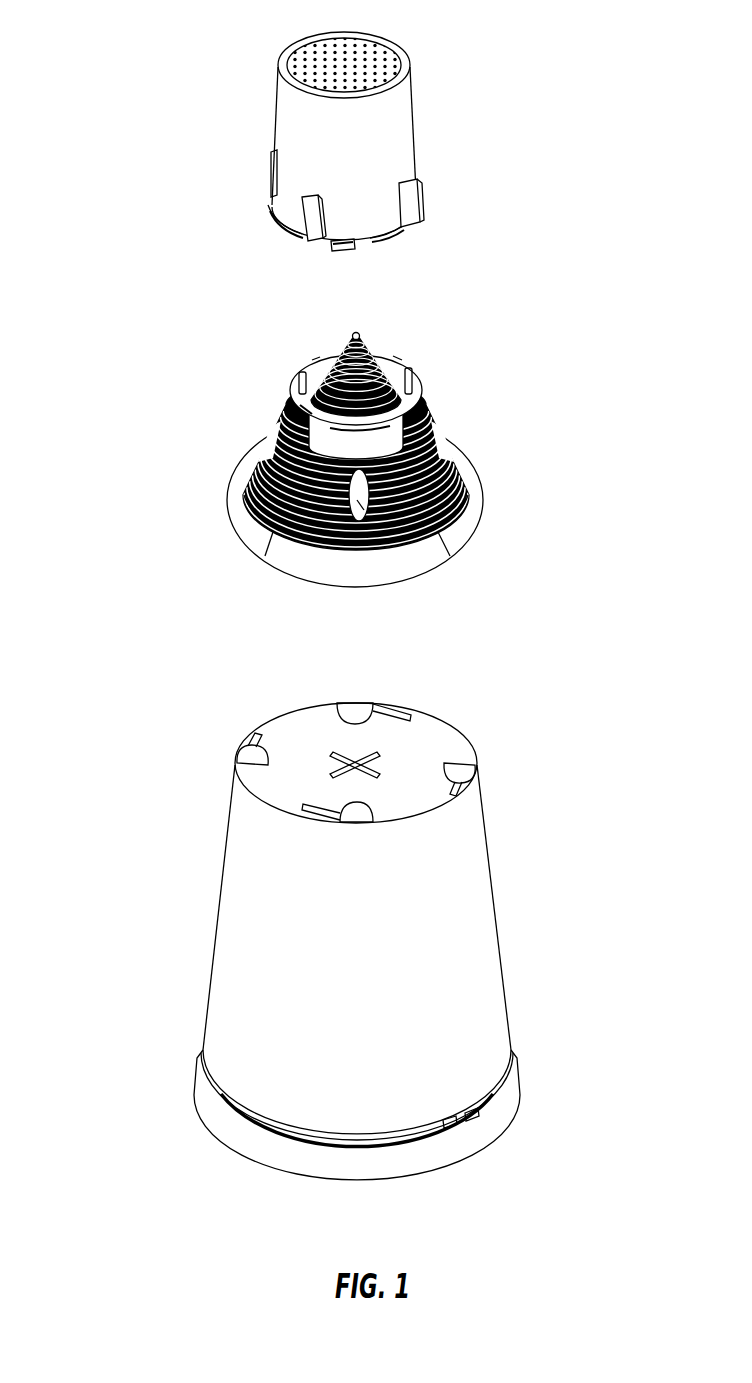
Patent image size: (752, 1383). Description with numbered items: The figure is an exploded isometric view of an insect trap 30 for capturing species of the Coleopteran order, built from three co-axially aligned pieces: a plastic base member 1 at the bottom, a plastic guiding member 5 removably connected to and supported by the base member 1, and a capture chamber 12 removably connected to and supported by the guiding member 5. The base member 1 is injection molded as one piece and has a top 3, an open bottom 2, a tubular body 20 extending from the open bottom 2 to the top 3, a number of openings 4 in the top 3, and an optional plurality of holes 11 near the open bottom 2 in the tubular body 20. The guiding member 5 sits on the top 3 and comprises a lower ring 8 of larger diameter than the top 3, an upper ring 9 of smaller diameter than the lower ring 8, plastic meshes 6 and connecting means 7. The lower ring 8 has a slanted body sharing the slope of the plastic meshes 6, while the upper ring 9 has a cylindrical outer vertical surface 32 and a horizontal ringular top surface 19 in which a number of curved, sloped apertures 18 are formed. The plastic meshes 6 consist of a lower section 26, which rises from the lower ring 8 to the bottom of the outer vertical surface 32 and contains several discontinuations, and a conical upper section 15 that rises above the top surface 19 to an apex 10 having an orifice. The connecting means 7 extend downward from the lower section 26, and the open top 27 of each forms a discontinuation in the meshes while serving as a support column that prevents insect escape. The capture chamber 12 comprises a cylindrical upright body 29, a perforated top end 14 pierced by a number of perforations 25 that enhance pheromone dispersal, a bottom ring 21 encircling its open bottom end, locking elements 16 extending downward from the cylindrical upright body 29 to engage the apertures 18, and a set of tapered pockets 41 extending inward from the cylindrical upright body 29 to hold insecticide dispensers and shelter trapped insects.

The base member 1 is at (188, 896).
The open bottom 2 is at (222, 1147).
The top 3 is at (417, 727).
The openings 4 is at (363, 765).
The guiding member 5 is at (203, 465).
The plastic meshes 6 is at (467, 493).
The connecting means 7 is at (450, 520).
The lower ring 8 is at (410, 557).
The upper ring 9 is at (440, 438).
The apex 10 is at (356, 335).
The holes 11 is at (454, 1131).
The capture chamber 12 is at (482, 128).
The perforated top end 14 is at (323, 56).
The upper section 15 is at (413, 375).
The locking elements 16 is at (352, 248).
The apertures 18 is at (305, 382).
The top surface 19 is at (302, 412).
The tubular body 20 is at (410, 947).
The bottom ring 21 is at (278, 228).
The perforations 25 is at (352, 32).
The lower section 26 is at (268, 556).
The open top 27 is at (252, 507).
The cylindrical upright body 29 is at (388, 127).
The insect trap 30 is at (168, 743).
The outer vertical surface 32 is at (407, 423).
The pockets 41 is at (310, 227).